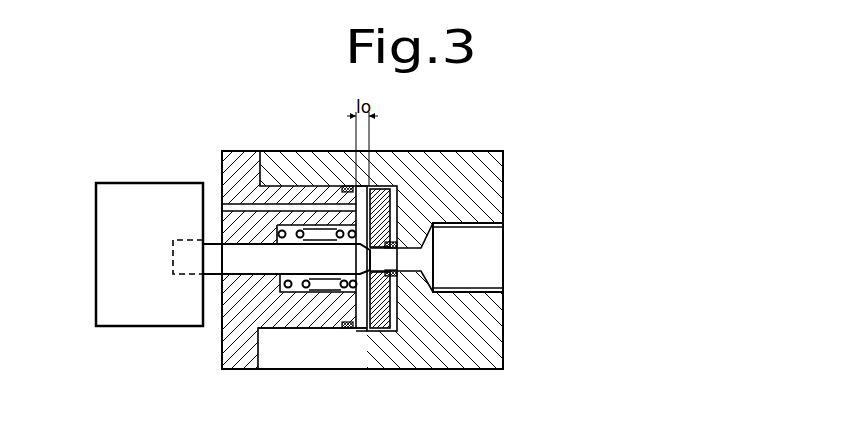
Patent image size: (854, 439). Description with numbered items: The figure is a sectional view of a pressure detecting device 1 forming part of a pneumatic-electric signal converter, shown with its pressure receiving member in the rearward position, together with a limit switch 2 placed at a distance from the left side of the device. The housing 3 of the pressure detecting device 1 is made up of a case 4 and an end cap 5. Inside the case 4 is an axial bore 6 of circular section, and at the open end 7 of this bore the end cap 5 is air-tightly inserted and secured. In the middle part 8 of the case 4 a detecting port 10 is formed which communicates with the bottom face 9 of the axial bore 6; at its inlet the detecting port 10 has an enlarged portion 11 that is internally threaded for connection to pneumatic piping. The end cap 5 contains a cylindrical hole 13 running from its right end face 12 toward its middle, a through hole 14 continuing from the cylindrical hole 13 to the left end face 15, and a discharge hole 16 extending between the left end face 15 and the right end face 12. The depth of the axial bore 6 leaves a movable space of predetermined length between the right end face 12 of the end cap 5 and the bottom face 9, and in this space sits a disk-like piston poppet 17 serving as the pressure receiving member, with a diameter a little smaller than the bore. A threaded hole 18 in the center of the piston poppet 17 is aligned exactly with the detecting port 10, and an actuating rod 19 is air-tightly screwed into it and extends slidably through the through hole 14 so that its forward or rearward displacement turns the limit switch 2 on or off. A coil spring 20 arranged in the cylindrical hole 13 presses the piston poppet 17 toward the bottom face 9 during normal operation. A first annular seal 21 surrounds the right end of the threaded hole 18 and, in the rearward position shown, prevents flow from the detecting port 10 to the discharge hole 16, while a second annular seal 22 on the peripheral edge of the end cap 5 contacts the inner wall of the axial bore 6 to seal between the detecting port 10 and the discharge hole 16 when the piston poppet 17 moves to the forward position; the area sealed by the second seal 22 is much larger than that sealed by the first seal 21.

The pressure detecting device 1 is at (271, 149).
The limit switch 2 is at (97, 183).
The housing 3 is at (296, 149).
The case 4 is at (492, 182).
The end cap 5 is at (232, 352).
The axial bore 6 is at (362, 331).
The open end 7 is at (303, 322).
The middle part 8 is at (415, 300).
The bottom face 9 is at (399, 190).
The detecting port 10 is at (413, 261).
The enlarged portion 11 is at (487, 281).
The right end face 12 is at (347, 330).
The cylindrical hole 13 is at (320, 330).
The through hole 14 is at (248, 267).
The left end face 15 is at (221, 325).
The discharge hole 16 is at (221, 203).
The piston poppet 17 is at (385, 331).
The threaded hole 18 is at (380, 189).
The actuating rod 19 is at (203, 258).
The coil spring 20 is at (282, 233).
The first annular seal 21 is at (398, 243).
The second annular seal 22 is at (344, 185).